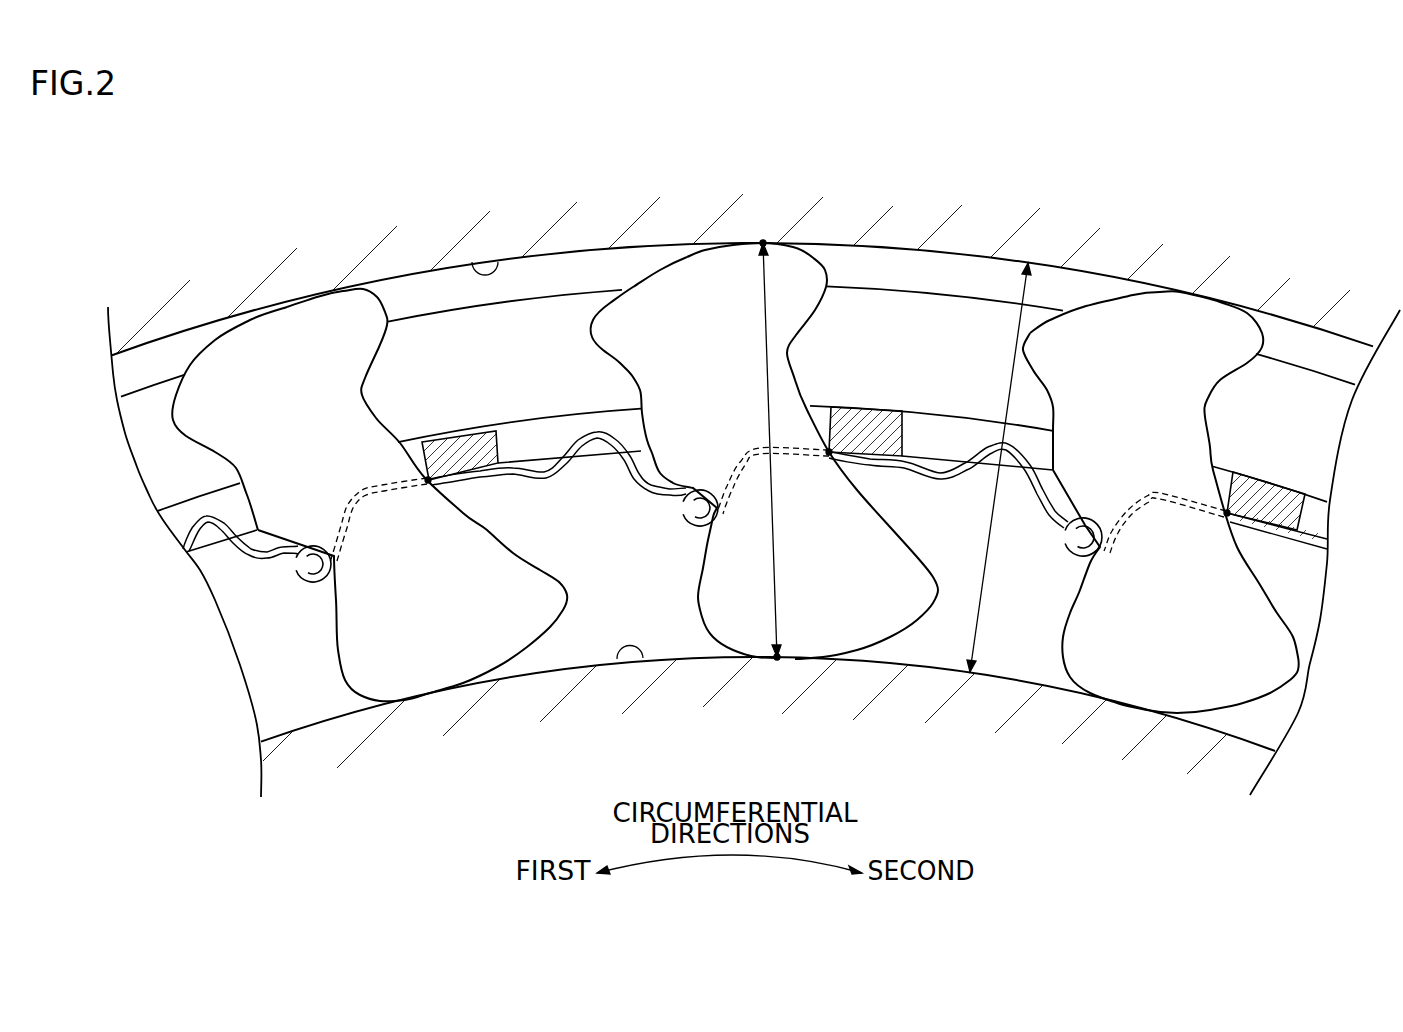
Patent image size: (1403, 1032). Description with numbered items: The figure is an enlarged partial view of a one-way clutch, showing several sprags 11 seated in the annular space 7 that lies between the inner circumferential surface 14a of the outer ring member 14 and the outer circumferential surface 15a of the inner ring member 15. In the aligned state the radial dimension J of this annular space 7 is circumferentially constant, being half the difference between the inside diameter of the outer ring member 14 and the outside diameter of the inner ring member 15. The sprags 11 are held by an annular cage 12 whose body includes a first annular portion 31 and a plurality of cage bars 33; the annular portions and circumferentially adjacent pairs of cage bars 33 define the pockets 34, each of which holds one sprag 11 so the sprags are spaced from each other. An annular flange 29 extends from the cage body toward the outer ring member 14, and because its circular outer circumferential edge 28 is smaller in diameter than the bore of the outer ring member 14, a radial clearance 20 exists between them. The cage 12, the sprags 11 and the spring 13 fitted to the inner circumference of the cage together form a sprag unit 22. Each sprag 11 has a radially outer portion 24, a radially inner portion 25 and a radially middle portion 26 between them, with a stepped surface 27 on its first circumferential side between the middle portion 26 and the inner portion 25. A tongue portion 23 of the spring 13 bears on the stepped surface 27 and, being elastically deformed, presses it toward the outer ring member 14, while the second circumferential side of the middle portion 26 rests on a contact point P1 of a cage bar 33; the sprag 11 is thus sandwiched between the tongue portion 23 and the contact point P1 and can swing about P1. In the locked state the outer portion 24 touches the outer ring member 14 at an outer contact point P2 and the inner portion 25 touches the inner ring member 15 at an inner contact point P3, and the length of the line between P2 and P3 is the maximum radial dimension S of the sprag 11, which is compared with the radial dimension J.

The annular space 7 is at (1028, 640).
The sprag 11 is at (515, 553).
The annular cage 12 is at (1300, 490).
The spring 13 is at (1286, 535).
The outer ring member 14 is at (755, 215).
The inner circumferential surface 14a is at (470, 262).
The inner ring member 15 is at (730, 660).
The outer circumferential surface 15a is at (641, 662).
The radial clearance 20 is at (1003, 275).
The sprag unit 22 is at (233, 573).
The tongue portion 23 is at (288, 574).
The radially outer portion 24 is at (312, 328).
The radially inner portion 25 is at (424, 658).
The radially middle portion 26 is at (317, 480).
The stepped surface 27 is at (314, 583).
The outer circumferential edge 28 is at (893, 290).
The annular flange 29 is at (946, 322).
The first annular portion 31 is at (530, 428).
The cage bar 33 is at (455, 440).
The pocket 34 is at (400, 443).
The radial dimension J is at (1007, 394).
The maximum radial dimension S is at (767, 412).
The contact point P1 is at (425, 492).
The outer contact point P2 is at (765, 240).
The inner contact point P3 is at (778, 662).